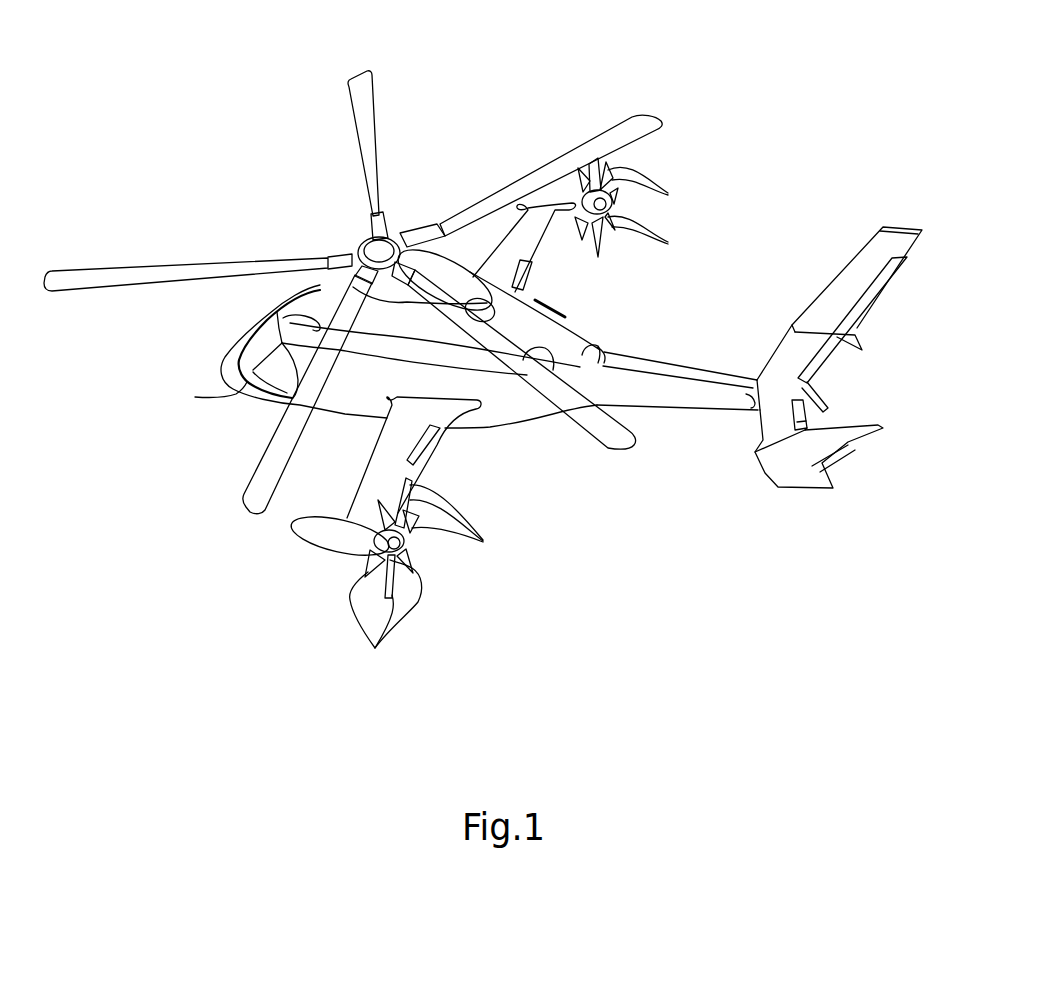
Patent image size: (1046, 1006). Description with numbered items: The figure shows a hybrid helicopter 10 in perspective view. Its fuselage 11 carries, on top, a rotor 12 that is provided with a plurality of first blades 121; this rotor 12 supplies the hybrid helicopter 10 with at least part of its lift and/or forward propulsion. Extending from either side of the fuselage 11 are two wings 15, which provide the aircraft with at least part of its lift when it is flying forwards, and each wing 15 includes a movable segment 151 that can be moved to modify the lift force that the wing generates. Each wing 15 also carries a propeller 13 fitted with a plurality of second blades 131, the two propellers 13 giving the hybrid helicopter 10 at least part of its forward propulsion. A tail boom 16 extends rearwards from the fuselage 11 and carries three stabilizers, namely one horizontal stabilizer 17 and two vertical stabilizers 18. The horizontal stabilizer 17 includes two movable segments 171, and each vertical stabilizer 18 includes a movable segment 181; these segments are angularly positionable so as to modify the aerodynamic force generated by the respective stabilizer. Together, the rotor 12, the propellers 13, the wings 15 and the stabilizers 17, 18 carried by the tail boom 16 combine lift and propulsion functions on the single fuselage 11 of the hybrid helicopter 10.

The hybrid helicopter 10 is at (188, 610).
The fuselage 11 is at (243, 390).
The rotor 12 is at (353, 284).
The first blades 121 is at (598, 137).
The propeller 13 is at (555, 410).
The second blades 131 is at (718, 207).
The wing 15 is at (499, 360).
The movable segment 151 is at (532, 264).
The tail boom 16 is at (683, 397).
The horizontal stabilizer 17 is at (860, 360).
The movable segments 171 is at (810, 372).
The vertical stabilizer 18 is at (860, 360).
The movable segment 181 is at (873, 290).